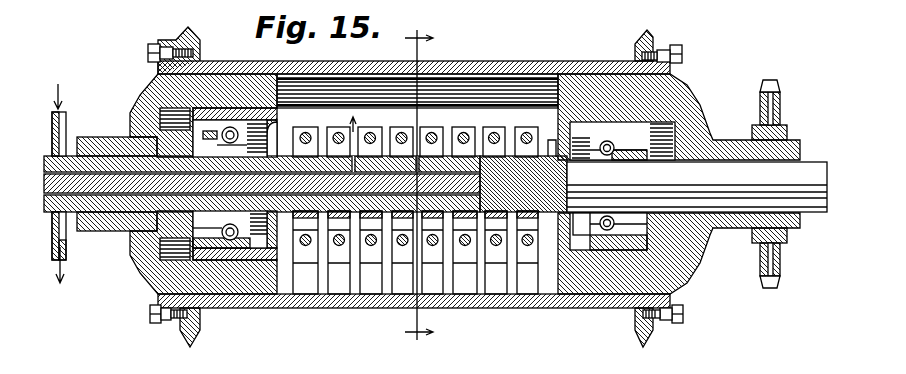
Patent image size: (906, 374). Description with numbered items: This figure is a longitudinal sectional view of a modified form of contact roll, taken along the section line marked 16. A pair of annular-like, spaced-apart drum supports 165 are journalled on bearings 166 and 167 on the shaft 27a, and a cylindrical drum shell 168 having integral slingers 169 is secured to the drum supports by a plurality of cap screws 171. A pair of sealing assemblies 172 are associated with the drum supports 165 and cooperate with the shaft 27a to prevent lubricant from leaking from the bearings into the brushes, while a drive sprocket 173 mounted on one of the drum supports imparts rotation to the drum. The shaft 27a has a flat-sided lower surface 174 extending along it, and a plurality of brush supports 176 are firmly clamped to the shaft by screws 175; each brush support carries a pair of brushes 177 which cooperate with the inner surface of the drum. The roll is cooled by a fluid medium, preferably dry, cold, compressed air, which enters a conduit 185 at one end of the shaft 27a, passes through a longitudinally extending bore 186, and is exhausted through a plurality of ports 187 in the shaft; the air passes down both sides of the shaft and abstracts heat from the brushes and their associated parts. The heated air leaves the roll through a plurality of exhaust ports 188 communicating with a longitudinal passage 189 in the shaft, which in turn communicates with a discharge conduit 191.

The section line 16- 16 is at (419, 187).
The shaft 27a is at (808, 165).
The drum supports 165 is at (227, 80).
The bearing 166 is at (222, 235).
The bearing 167 is at (614, 226).
The drum shell 168 is at (543, 61).
The slingers 169 is at (647, 36).
The cap screws 171 is at (148, 52).
The sealing assemblies 172 is at (278, 143).
The drive sprocket 173 is at (779, 99).
The flat-sided lower surface 174 is at (293, 217).
The screws 175 is at (470, 133).
The brush supports 176 is at (447, 137).
The brushes 177 is at (338, 282).
The conduit 185 is at (67, 116).
The longitudinally extending bore 186 is at (104, 165).
The ports 187 is at (410, 158).
The exhaust ports 188 is at (356, 197).
The longitudinal passage 189 is at (263, 195).
The discharge conduit 191 is at (66, 248).